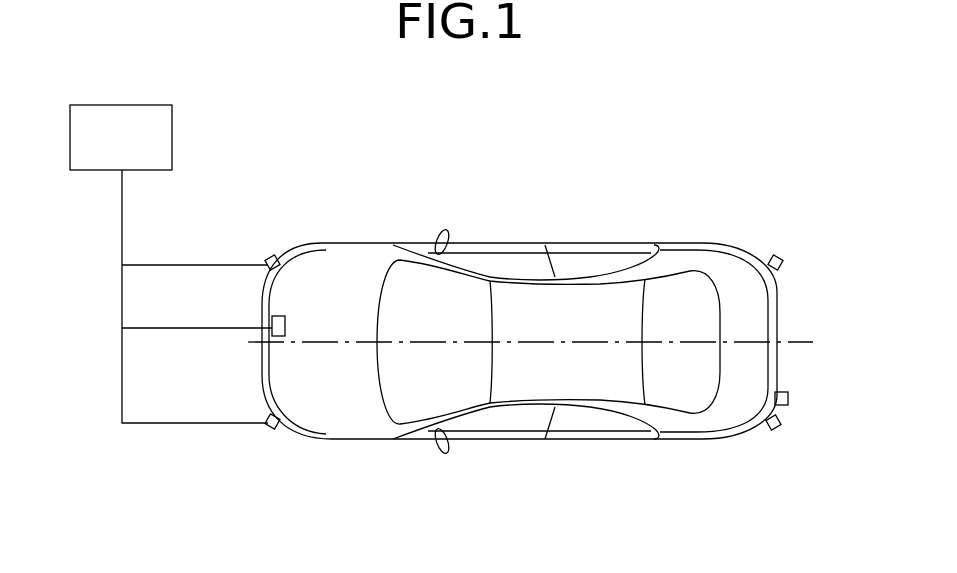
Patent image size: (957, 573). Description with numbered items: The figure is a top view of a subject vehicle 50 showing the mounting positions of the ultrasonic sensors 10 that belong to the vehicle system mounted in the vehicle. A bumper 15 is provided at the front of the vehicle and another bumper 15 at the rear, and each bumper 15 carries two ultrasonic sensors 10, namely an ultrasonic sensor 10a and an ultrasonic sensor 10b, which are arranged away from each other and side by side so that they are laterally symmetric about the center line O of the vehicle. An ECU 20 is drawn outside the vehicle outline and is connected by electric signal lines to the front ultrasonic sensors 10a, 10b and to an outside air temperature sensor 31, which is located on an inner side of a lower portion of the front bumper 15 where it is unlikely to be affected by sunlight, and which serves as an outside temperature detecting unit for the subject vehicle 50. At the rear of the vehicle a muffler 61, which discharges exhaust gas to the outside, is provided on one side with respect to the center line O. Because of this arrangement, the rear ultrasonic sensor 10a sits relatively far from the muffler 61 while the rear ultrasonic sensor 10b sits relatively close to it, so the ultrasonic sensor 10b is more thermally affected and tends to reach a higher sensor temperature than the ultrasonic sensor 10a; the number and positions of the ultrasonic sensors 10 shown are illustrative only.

The ultrasonic sensor 10 is at (242, 224).
The ultrasonic sensor 10a is at (271, 255).
The ultrasonic sensor 10b is at (272, 431).
The bumper 15 is at (305, 240).
The ECU 20 is at (151, 105).
The outside air temperature sensor 31 is at (268, 314).
The subject vehicle 50 is at (576, 243).
The muffler 61 is at (790, 398).
The center line O is at (544, 341).